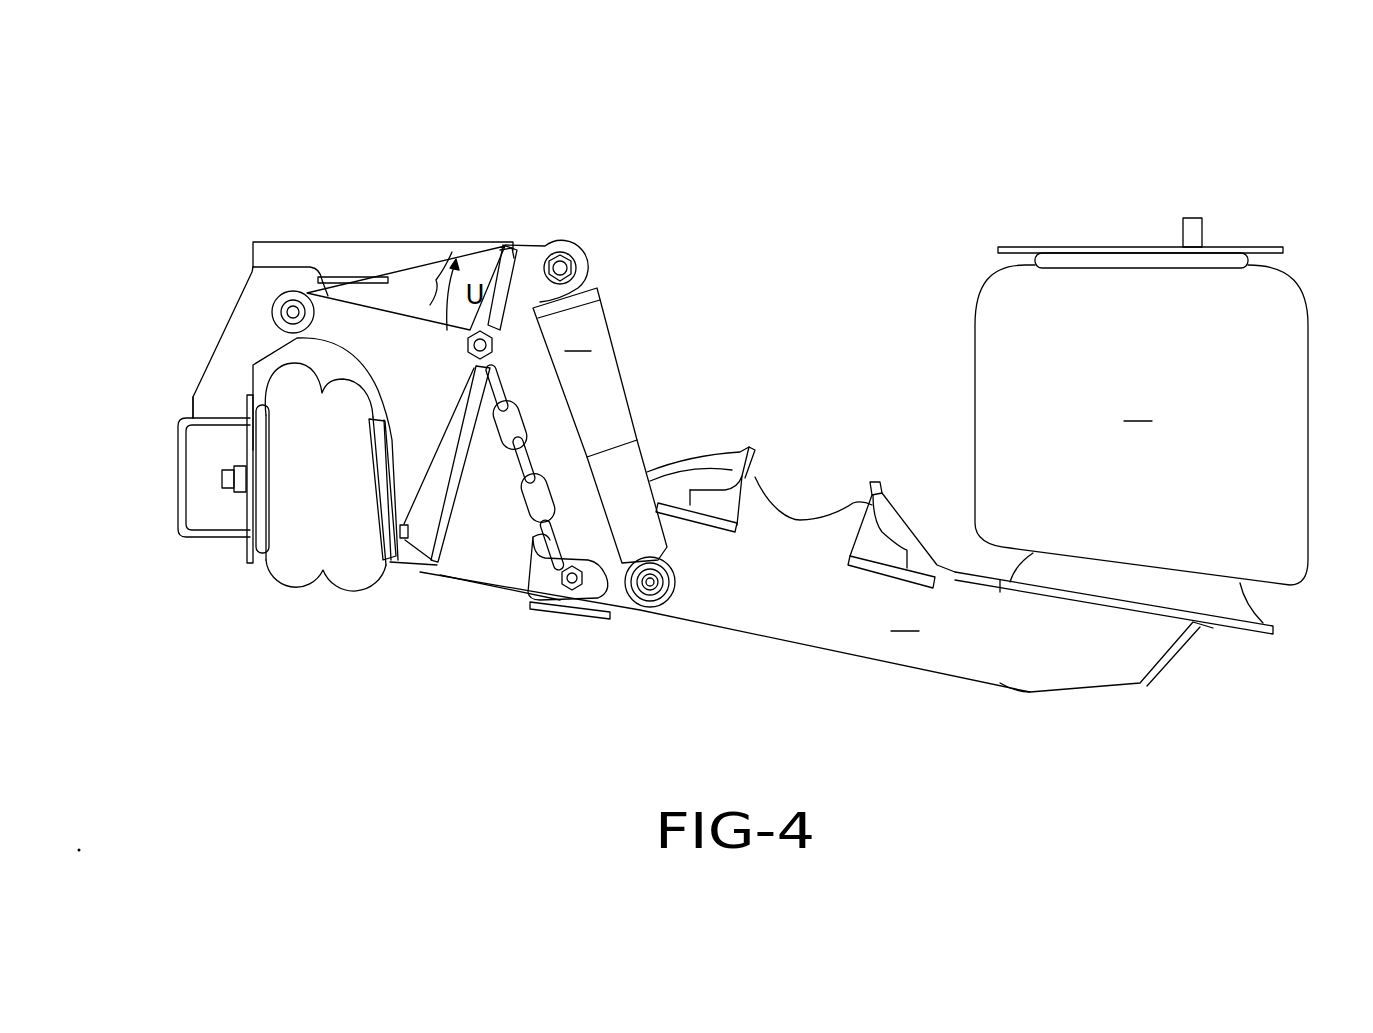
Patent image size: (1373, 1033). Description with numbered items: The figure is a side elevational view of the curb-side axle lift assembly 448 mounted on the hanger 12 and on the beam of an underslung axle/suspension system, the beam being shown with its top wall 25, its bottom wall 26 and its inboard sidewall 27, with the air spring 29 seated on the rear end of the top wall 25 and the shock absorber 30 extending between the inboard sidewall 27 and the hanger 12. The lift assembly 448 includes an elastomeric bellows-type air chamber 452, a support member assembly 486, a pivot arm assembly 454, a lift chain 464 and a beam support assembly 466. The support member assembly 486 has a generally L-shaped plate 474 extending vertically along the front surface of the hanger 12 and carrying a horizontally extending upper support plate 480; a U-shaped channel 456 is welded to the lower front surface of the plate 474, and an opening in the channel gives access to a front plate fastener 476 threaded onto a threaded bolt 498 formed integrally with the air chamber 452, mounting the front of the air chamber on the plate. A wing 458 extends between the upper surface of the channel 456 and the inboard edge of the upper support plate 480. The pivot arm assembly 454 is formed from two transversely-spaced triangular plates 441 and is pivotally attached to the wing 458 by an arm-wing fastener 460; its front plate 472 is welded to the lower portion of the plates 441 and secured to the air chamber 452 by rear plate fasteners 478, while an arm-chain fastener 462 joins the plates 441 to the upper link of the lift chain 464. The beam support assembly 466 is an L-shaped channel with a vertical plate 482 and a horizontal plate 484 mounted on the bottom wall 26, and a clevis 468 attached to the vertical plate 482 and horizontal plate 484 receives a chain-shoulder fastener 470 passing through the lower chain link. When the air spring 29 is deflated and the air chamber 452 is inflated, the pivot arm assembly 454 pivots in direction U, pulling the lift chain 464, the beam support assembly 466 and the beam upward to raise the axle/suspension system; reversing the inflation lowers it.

The curb-side axle lift assembly 448 is at (759, 168).
The hanger 12 is at (280, 243).
The upper support plate 480 is at (353, 277).
The arm-wing fastener 460 is at (296, 308).
The pivot arm assembly 454 is at (415, 298).
The triangular shaped plates 441 is at (500, 245).
The wing 458 is at (218, 337).
The arm-chain fastener 462 is at (492, 338).
The shock absorber 30 is at (586, 401).
The lift chain 464 is at (532, 412).
The top wall 25 is at (700, 468).
The support member assembly 486 is at (186, 382).
The threaded bolt 498 is at (228, 476).
The U-shaped channel 456 is at (178, 488).
The front plate fastener 476 is at (240, 505).
The L-shaped plate 474 is at (247, 563).
The air chamber 452 is at (350, 608).
The front plate 472 is at (407, 585).
The rear plate fasteners 478 is at (427, 553).
The vertical plate 482 is at (560, 580).
The chain-shoulder fastener 470 is at (540, 594).
The beam support assembly 466 is at (559, 623).
The horizontal plate 484 is at (595, 612).
The clevis 468 is at (627, 605).
The inboard sidewall 27 is at (855, 554).
The bottom wall 26 is at (828, 652).
The air spring 29 is at (1141, 420).